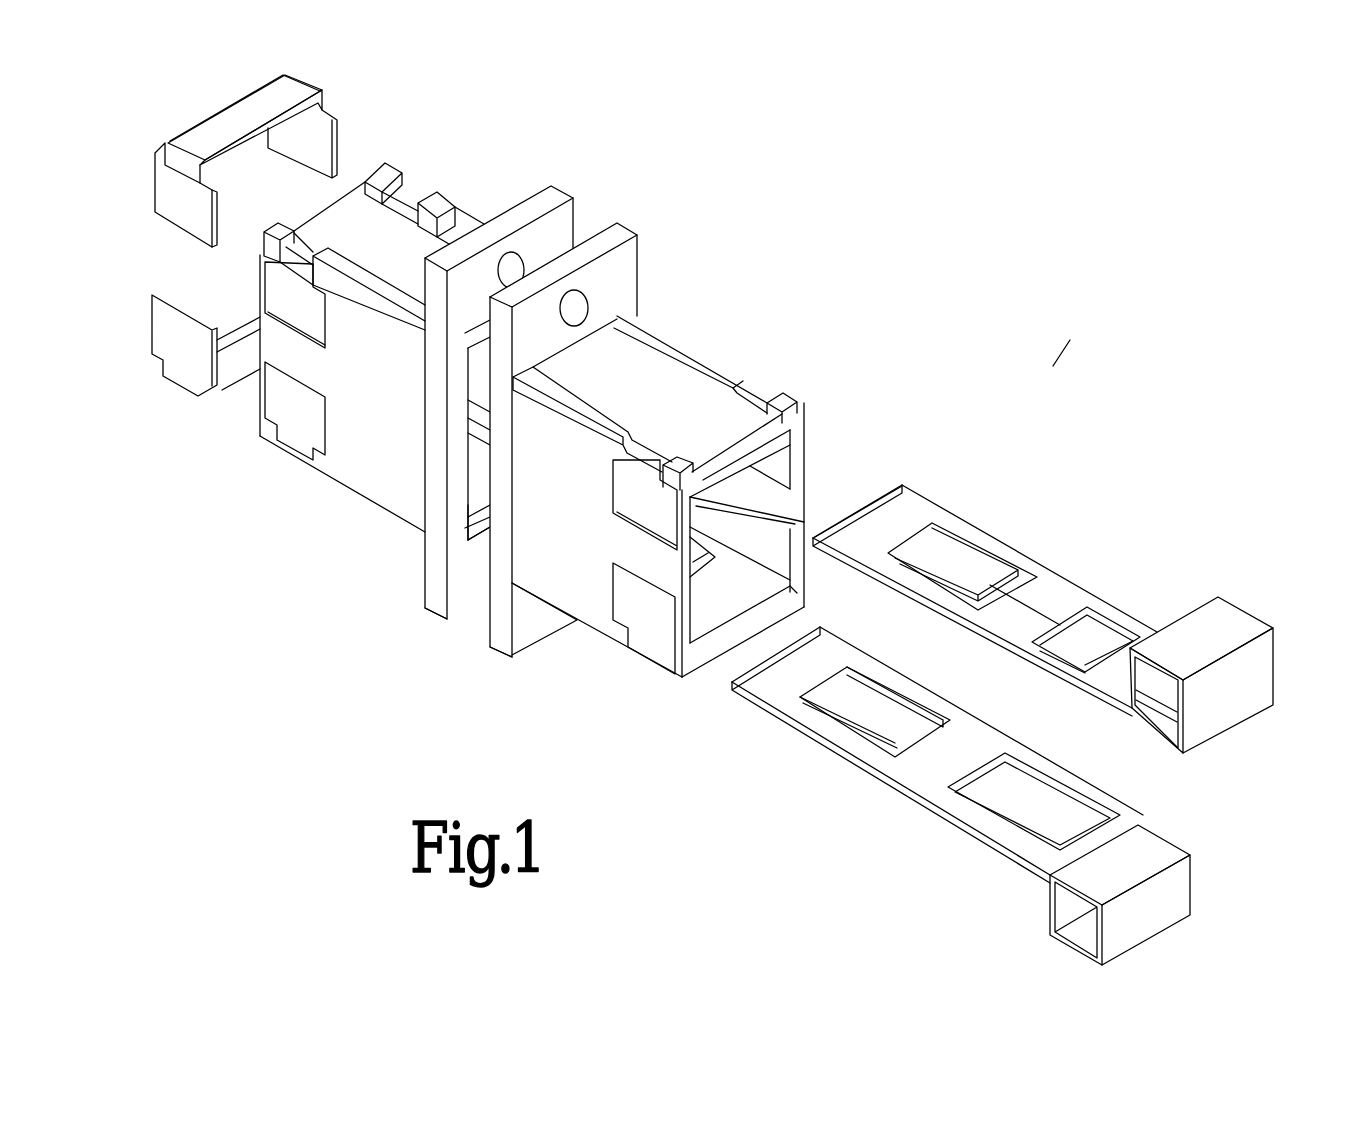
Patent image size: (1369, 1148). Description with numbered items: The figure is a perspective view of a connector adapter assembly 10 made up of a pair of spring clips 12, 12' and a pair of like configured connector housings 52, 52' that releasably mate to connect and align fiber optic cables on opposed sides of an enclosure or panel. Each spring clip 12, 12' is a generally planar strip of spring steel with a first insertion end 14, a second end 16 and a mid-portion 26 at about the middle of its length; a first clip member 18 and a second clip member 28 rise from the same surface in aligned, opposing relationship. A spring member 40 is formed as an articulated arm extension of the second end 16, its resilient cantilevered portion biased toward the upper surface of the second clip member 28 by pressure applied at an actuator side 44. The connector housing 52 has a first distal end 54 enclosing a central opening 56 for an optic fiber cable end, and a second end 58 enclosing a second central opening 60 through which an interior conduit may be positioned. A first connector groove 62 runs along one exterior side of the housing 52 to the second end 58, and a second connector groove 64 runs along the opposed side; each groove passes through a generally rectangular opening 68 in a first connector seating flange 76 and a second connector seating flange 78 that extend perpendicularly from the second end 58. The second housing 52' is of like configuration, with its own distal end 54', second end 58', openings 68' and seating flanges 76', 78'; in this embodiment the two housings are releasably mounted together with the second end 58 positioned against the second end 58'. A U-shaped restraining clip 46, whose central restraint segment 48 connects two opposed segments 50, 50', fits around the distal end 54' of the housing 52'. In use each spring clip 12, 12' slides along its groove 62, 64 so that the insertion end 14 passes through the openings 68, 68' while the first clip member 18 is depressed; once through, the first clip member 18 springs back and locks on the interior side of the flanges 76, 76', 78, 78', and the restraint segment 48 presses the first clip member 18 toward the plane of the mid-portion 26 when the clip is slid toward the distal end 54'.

The connector adapter assembly 10 is at (1047, 374).
The spring clip 12 is at (995, 603).
The spring clip 12' is at (937, 755).
The first insertion end 14 is at (883, 494).
The second end 16 is at (1263, 722).
The first clip member 18 is at (987, 570).
The mid-portion 26 is at (1011, 621).
The second clip member 28 is at (1104, 638).
The spring member 40 is at (1187, 933).
The actuator side 44 is at (1171, 662).
The restraining clip 46 is at (267, 100).
The central restraint segment 48 is at (212, 139).
The opposed segment 50 is at (186, 195).
The opposed segment 50' is at (206, 345).
The connector adapter housing 52 is at (602, 522).
The second housing adapter connector 52' is at (372, 347).
The first distal end 54 is at (822, 500).
The distal end 54' is at (246, 357).
The central opening 56 is at (757, 585).
The second end 58 is at (535, 661).
The second end 58' is at (400, 630).
The second central opening 60 is at (480, 467).
The first connector groove 62 is at (651, 412).
The second connector groove 64 is at (727, 645).
The rectangular opening 68 is at (675, 348).
The opening 68' is at (388, 298).
The first connector seating flange 76 is at (602, 436).
The first connector seating flange 76' is at (530, 390).
The second connector seating flange 78 is at (552, 628).
The second connector seating flange 78' is at (461, 601).